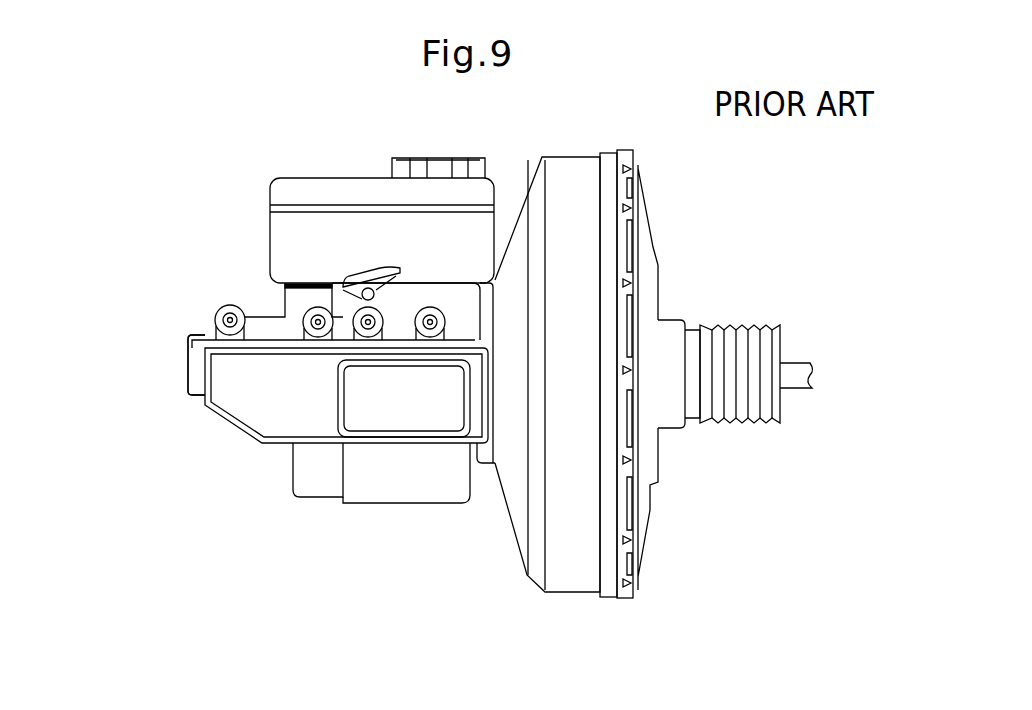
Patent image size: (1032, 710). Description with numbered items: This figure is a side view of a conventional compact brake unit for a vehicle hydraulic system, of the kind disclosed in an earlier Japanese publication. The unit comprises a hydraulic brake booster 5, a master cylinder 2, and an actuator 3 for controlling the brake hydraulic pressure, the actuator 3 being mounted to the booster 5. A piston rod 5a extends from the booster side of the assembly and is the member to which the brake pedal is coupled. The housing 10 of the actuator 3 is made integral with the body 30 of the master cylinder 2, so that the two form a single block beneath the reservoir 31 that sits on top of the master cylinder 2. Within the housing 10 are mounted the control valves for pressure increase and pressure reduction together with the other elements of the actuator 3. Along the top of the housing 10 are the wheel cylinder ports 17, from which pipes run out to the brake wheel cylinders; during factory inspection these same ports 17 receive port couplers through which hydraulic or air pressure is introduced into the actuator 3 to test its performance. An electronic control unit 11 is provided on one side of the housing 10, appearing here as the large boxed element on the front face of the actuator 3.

The reservoir 31 is at (337, 240).
The actuator 3 is at (237, 402).
The electronic control unit 11 is at (270, 393).
The housing 10 is at (193, 370).
The body 30 is at (196, 365).
The master cylinder 2 is at (193, 337).
The wheel cylinder ports 17 is at (428, 320).
The hydraulic brake booster 5 is at (583, 237).
The piston rod 5a is at (793, 370).